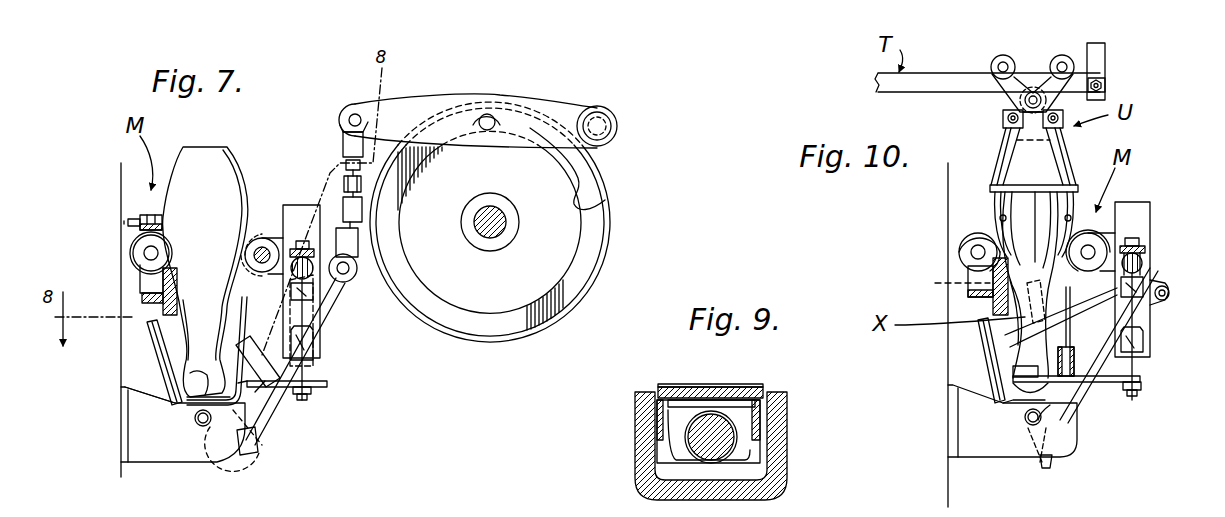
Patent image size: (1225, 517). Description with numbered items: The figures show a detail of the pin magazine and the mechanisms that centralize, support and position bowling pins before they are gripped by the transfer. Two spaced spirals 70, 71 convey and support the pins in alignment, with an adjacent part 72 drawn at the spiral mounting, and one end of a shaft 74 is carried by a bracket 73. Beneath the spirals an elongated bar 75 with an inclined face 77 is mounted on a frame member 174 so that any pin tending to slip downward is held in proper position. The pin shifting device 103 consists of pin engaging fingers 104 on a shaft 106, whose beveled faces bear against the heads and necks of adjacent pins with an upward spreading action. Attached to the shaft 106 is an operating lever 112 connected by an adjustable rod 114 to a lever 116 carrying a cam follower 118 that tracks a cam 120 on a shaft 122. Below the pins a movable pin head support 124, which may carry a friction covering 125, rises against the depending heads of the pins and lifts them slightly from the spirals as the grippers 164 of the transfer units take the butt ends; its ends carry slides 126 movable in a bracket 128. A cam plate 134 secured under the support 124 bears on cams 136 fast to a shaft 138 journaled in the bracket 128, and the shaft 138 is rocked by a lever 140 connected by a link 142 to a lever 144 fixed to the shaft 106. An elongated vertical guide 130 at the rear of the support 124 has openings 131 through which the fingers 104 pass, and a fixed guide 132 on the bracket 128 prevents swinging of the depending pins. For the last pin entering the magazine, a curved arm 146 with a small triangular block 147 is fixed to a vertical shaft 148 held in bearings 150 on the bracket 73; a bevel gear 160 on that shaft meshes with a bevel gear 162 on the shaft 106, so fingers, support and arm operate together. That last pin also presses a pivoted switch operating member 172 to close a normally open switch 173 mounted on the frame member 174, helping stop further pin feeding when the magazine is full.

In FIG. 7, the spiral 70 is at (135, 245).
In FIG. 10, the spiral 70 is at (968, 240).
In FIG. 7, the spiral 71 is at (257, 236).
In FIG. 10, the spiral 71 is at (1097, 233).
In FIG. 7, the roller pin 72 is at (147, 253).
In FIG. 10, the roller pin 72 is at (971, 253).
In FIG. 7, the bracket 73 is at (291, 205).
In FIG. 7, the shaft 74 is at (262, 255).
In FIG. 10, the shaft 74 is at (1068, 247).
In FIG. 7, the elongated bar 75 is at (183, 302).
In FIG. 10, the elongated bar 75 is at (996, 305).
In FIG. 7, the inclined face 77 is at (168, 285).
In FIG. 10, the inclined face 77 is at (1062, 230).
In FIG. 7, the pin shifting device 103 is at (338, 315).
In FIG. 10, the pin shifting device 103 is at (1112, 303).
In FIG. 7, the pin engaging fingers 104 is at (254, 355).
In FIG. 10, the pin engaging fingers 104 is at (943, 285).
In FIG. 10, the shaft 106 is at (1143, 259).
In FIG. 7, the operating lever 112 is at (358, 258).
In FIG. 7, the adjustable rod 114 is at (346, 186).
In FIG. 7, the lever 116 is at (415, 108).
In FIG. 7, the cam follower 118 is at (522, 103).
In FIG. 7, the cam 120 is at (590, 236).
In FIG. 7, the shaft 122 is at (487, 215).
In FIG. 7, the pin head support 124 is at (200, 402).
In FIG. 9, the pin head support 124 is at (738, 387).
In FIG. 10, the pin head support 124 is at (1015, 405).
In FIG. 7, the friction covering 125 is at (155, 378).
In FIG. 9, the friction covering 125 is at (757, 386).
In FIG. 9, the slides 126 is at (790, 413).
In FIG. 10, the slides 126 is at (1050, 412).
In FIG. 7, the bracket 128 is at (133, 420).
In FIG. 10, the bracket 128 is at (965, 405).
In FIG. 7, the elongated vertical guide 130 is at (248, 300).
In FIG. 10, the elongated vertical guide 130 is at (1068, 341).
In FIG. 10, the openings 131 is at (1067, 356).
In FIG. 7, the fixed guide 132 is at (162, 350).
In FIG. 10, the fixed guide 132 is at (990, 338).
In FIG. 9, the cam plate 134 is at (675, 404).
In FIG. 9, the cams 136 is at (680, 448).
In FIG. 7, the shaft 138 is at (203, 426).
In FIG. 9, the shaft 138 is at (712, 450).
In FIG. 10, the shaft 138 is at (1030, 426).
In FIG. 7, the lever 140 is at (228, 470).
In FIG. 10, the lever 140 is at (1045, 464).
In FIG. 7, the link 142 is at (256, 445).
In FIG. 10, the link 142 is at (1080, 393).
In FIG. 10, the lever 144 is at (1161, 287).
In FIG. 7, the curved arm 146 is at (300, 384).
In FIG. 10, the curved arm 146 is at (1120, 387).
In FIG. 7, the triangular block 147 is at (265, 388).
In FIG. 10, the triangular block 147 is at (1020, 378).
In FIG. 7, the vertical shaft 148 is at (312, 398).
In FIG. 10, the vertical shaft 148 is at (1142, 372).
In FIG. 7, the bearings 150 is at (314, 290).
In FIG. 10, the bearings 150 is at (1144, 288).
In FIG. 7, the bevel gear 160 is at (302, 241).
In FIG. 10, the bevel gear 160 is at (1134, 238).
In FIG. 7, the bevel gear 162 is at (291, 270).
In FIG. 10, the bevel gear 162 is at (1143, 252).
In FIG. 10, the grippers 164 is at (1004, 230).
In FIG. 7, the pivoted switch operating member 172 is at (162, 222).
In FIG. 7, the normally open switch 173 is at (140, 222).
In FIG. 7, the frame member 174 is at (142, 298).
In FIG. 10, the frame member 174 is at (985, 298).